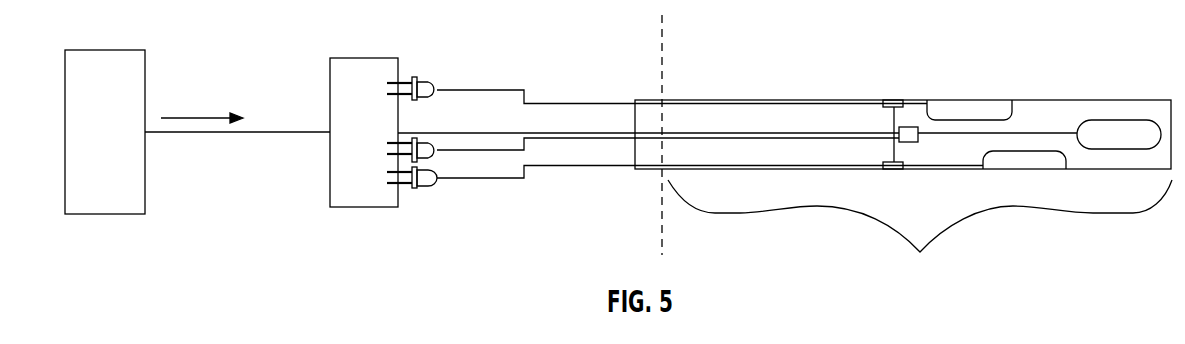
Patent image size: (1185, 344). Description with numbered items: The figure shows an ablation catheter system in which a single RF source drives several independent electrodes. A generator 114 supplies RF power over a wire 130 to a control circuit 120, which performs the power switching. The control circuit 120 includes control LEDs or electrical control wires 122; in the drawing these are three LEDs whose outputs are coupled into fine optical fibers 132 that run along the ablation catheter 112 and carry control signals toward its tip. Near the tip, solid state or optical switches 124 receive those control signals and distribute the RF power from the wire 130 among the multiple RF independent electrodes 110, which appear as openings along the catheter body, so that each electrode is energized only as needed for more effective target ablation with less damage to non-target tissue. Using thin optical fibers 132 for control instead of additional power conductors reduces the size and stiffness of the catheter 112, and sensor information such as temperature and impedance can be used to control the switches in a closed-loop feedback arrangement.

The RF independent electrodes 110 is at (972, 108).
The ablation catheter 112 is at (903, 192).
The generator 114 is at (105, 214).
The control circuit 120 is at (363, 207).
The control LEDs or electrical control wires 122 is at (426, 77).
The solid state or optical switches 124 is at (894, 100).
The wire 130 is at (280, 132).
The optical fibers 132 is at (552, 102).